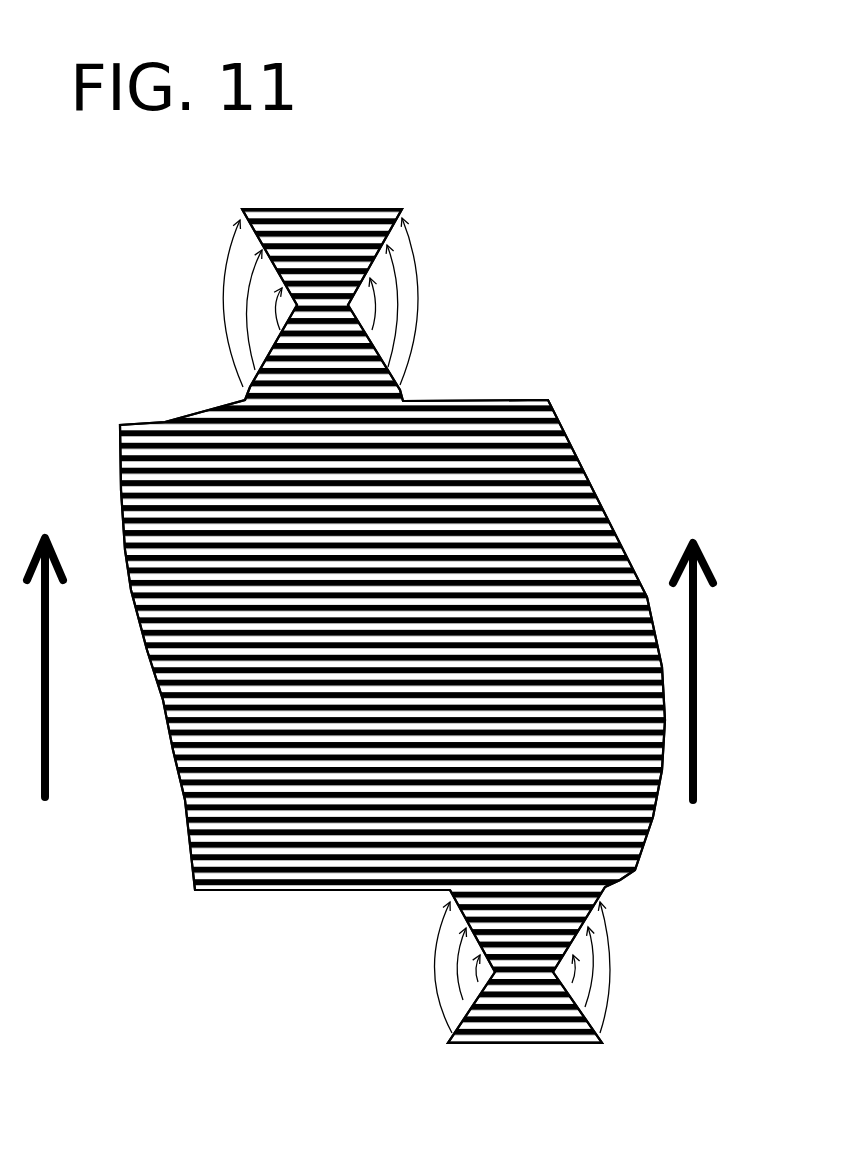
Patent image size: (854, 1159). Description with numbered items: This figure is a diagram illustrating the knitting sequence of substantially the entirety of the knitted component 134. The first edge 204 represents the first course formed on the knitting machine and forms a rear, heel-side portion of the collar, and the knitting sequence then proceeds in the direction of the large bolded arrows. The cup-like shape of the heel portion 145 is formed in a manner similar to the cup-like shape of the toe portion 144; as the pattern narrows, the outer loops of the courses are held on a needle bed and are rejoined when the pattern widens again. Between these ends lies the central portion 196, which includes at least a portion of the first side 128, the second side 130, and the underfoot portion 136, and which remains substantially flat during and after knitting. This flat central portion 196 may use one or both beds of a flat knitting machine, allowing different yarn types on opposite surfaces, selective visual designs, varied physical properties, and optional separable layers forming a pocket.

The knitted component 134 is at (437, 94).
The toe portion 144 is at (172, 281).
The heel portion 145 is at (424, 1023).
The first side 128 is at (138, 480).
The second side 130 is at (622, 573).
The central portion 196 is at (378, 613).
The underfoot portion 136 is at (462, 832).
The first edge 204 is at (523, 1045).